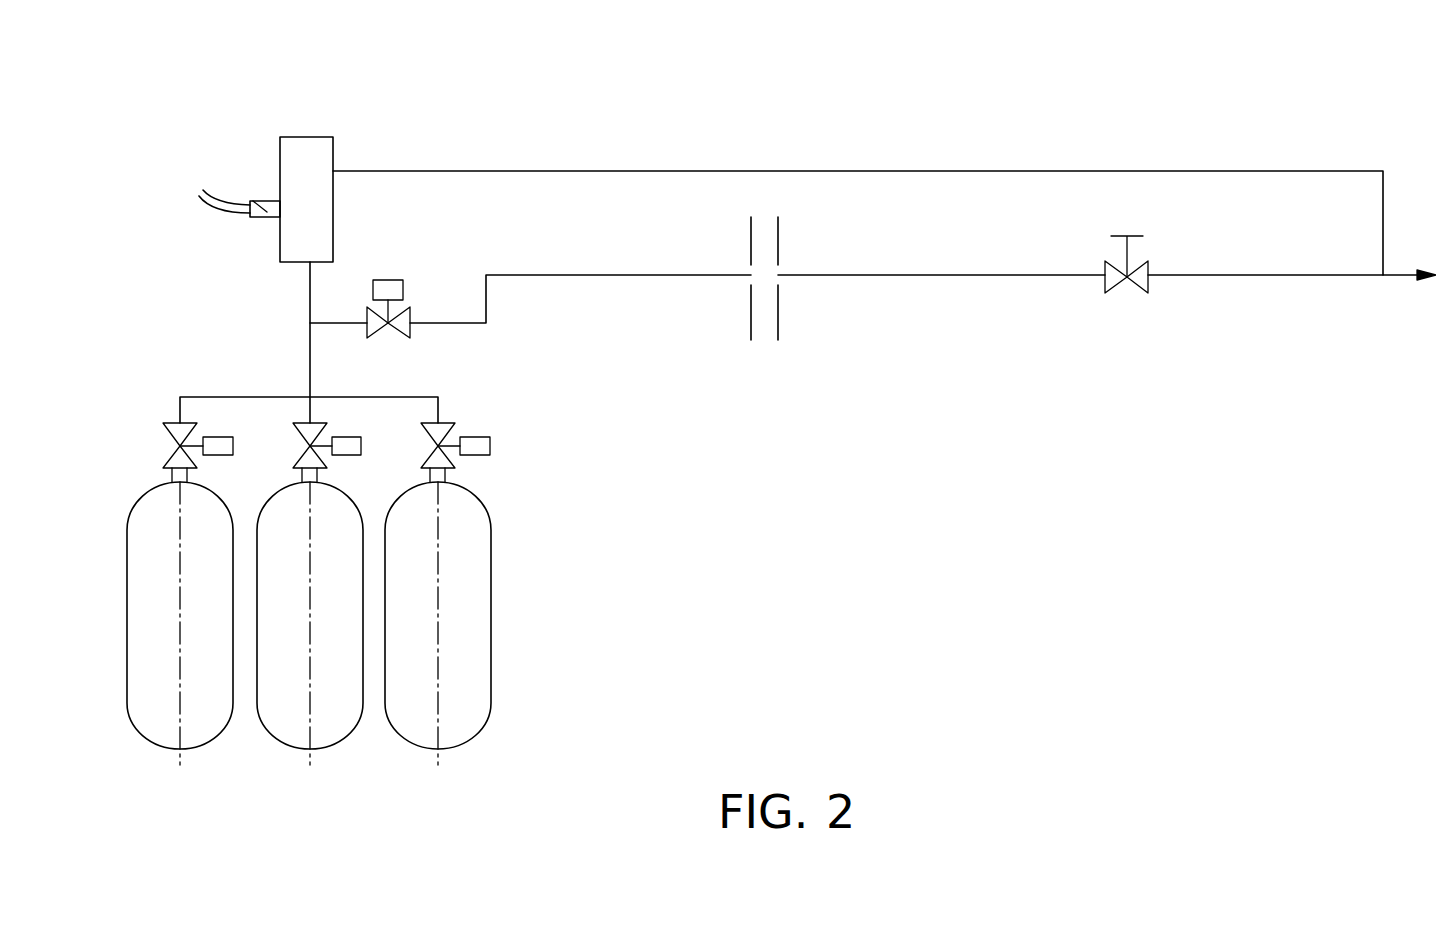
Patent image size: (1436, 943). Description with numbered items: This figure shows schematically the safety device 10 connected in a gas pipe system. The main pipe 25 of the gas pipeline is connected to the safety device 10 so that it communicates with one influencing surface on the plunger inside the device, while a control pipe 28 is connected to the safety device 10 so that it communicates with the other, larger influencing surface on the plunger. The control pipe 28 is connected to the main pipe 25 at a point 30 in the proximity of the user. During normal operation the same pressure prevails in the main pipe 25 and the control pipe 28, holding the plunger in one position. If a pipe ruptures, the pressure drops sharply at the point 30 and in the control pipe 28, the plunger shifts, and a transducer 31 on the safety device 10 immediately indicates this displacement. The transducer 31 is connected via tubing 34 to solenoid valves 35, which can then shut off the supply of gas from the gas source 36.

The safety device 10 is at (317, 137).
The main pipe 25 is at (607, 276).
The control pipe 28 is at (686, 171).
The point 30 is at (1383, 282).
The transducer 31 is at (252, 201).
The tubing 34 is at (214, 195).
The solenoid valves 35 is at (392, 287).
The gas source 36 is at (468, 622).